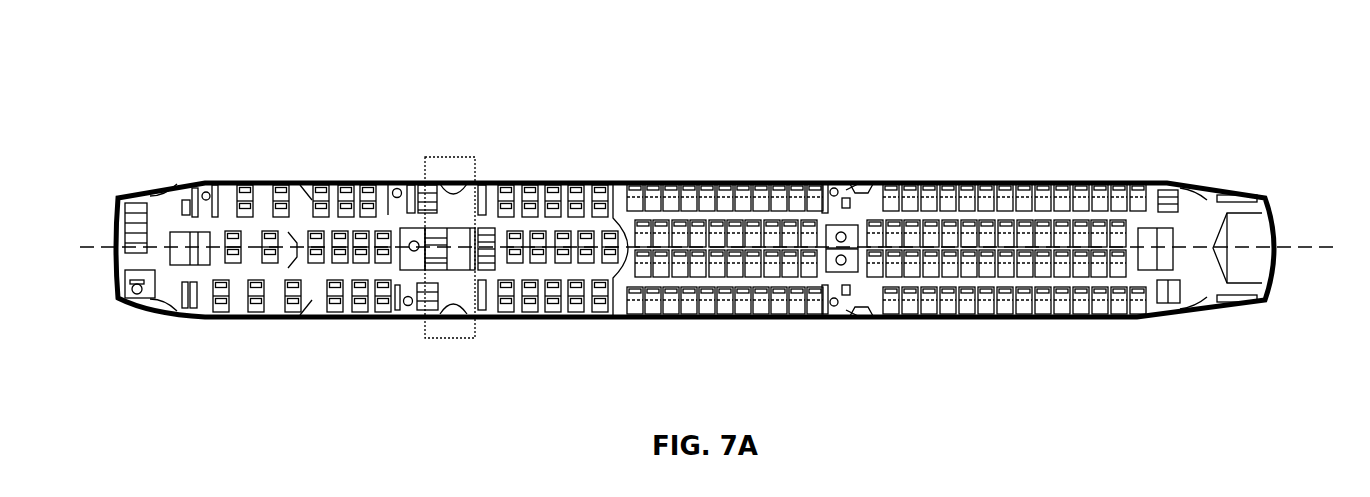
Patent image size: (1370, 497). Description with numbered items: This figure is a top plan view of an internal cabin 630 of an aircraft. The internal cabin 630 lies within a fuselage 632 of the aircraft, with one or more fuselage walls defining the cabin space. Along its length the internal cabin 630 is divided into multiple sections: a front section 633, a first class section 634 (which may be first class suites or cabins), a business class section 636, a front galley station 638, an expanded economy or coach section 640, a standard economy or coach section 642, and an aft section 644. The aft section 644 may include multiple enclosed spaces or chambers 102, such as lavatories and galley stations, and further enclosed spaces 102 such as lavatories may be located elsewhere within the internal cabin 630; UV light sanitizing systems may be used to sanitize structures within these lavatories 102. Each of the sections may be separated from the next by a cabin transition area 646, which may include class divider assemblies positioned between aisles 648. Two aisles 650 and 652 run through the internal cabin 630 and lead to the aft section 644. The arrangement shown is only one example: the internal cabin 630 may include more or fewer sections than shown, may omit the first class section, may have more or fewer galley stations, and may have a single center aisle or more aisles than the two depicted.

The enclosed spaces 102 is at (412, 240).
The internal cabin 630 is at (250, 88).
The fuselage 632 is at (566, 112).
The front section 633 is at (173, 335).
The first class section 634 is at (264, 318).
The business class section 636 is at (337, 182).
The front galley station 638 is at (451, 334).
The expanded economy section 640 is at (547, 316).
The standard economy section 642 is at (668, 182).
The aft section 644 is at (1212, 192).
The cabin transition area 646 is at (192, 182).
The aisles 648 is at (428, 212).
The aisle 650 is at (1010, 212).
The aisle 652 is at (1028, 282).